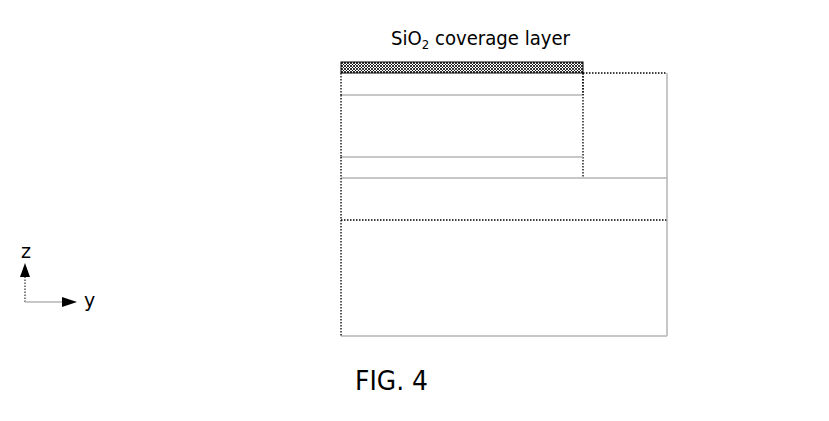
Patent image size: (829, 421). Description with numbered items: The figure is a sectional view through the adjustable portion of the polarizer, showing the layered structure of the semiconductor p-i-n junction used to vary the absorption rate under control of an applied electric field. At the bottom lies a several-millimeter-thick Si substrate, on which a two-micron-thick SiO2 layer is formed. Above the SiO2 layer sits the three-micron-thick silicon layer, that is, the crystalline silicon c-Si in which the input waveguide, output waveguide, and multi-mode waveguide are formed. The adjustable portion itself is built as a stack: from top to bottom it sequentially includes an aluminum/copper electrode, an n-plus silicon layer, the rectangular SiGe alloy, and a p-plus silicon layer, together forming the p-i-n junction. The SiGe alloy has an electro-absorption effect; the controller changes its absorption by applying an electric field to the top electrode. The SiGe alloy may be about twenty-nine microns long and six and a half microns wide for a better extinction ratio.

The SiGe alloy SiGe is at (351, 130).
The SiO2 layer SiO2 is at (352, 204).
The silicon substrate Si substrate is at (352, 278).
The crystalline silicon c-Si is at (647, 131).